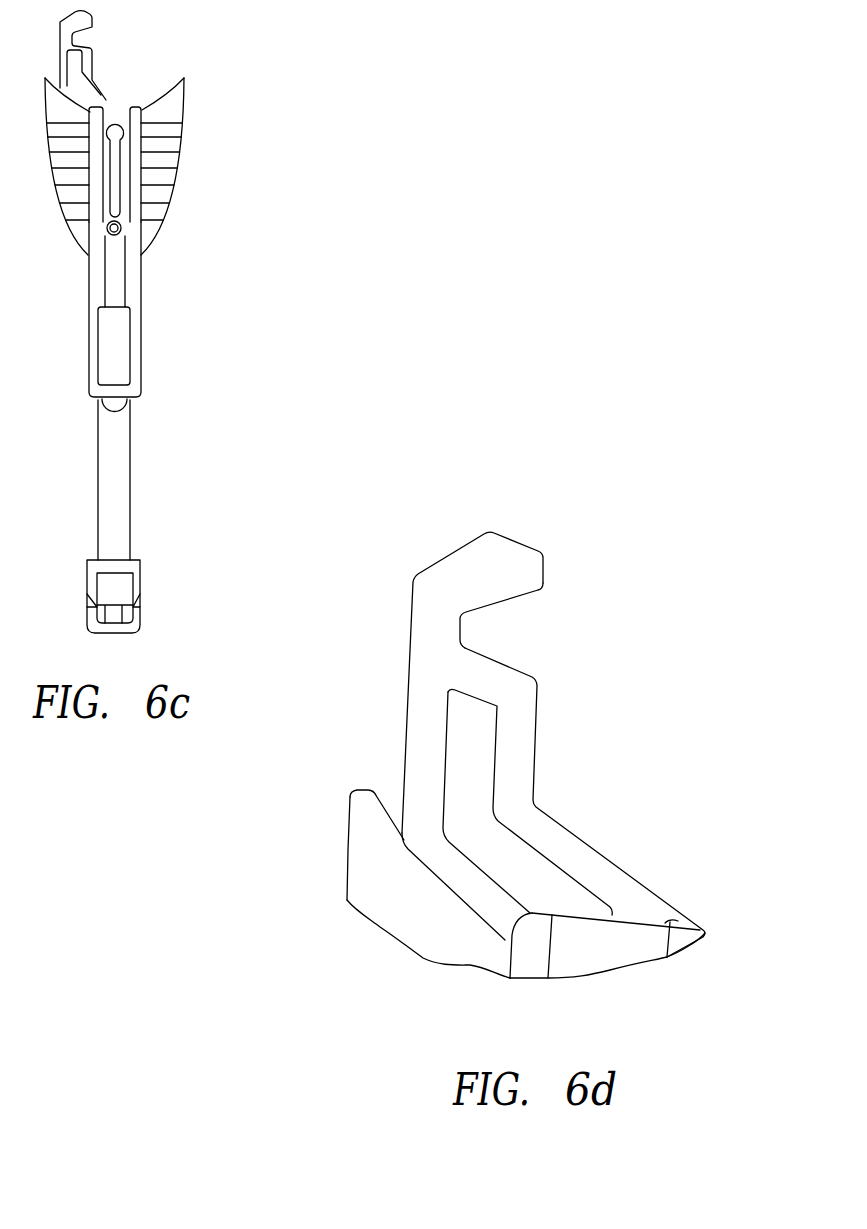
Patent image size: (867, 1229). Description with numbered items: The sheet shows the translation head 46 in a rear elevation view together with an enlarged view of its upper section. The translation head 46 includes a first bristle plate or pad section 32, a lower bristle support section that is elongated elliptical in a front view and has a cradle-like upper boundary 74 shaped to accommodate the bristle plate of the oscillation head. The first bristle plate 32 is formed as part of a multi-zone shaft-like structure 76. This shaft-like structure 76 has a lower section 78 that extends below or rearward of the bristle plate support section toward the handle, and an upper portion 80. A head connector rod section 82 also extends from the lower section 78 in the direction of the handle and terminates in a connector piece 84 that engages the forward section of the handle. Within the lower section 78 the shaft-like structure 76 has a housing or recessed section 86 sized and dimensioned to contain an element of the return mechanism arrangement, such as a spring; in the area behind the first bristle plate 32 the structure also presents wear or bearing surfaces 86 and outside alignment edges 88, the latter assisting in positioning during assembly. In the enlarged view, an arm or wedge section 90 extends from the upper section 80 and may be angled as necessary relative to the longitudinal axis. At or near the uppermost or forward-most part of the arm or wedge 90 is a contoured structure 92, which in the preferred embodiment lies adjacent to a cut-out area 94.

In FIG. 6d, the first bristle plate or pad section 32 is at (360, 872).
In FIG. 6c, the translation head 46 is at (215, 248).
In FIG. 6c, the cradle-like upper boundary 74 is at (167, 90).
In FIG. 6c, the shaft-like structure 76 is at (88, 255).
In FIG. 6c, the lower section 78 is at (140, 347).
In FIG. 6c, the upper portion 80 is at (108, 112).
In FIG. 6d, the upper portion 80 is at (645, 933).
In FIG. 6c, the head connector rod section 82 is at (130, 477).
In FIG. 6c, the connector piece 84 is at (138, 603).
In FIG. 6c, the housing or recessed section 86 is at (133, 212).
In FIG. 6c, the outside alignment edges 88 is at (147, 143).
In FIG. 6d, the arm or wedge section 90 is at (575, 832).
In FIG. 6d, the contoured structure 92 is at (527, 545).
In FIG. 6d, the cut-out area 94 is at (478, 628).